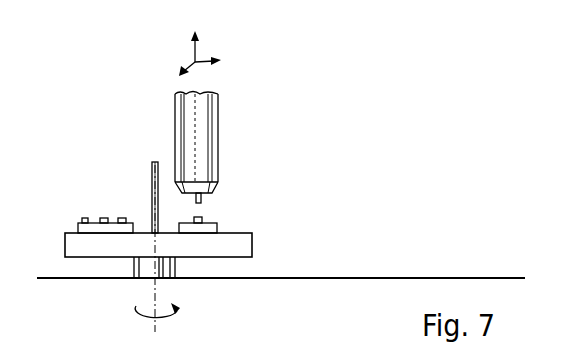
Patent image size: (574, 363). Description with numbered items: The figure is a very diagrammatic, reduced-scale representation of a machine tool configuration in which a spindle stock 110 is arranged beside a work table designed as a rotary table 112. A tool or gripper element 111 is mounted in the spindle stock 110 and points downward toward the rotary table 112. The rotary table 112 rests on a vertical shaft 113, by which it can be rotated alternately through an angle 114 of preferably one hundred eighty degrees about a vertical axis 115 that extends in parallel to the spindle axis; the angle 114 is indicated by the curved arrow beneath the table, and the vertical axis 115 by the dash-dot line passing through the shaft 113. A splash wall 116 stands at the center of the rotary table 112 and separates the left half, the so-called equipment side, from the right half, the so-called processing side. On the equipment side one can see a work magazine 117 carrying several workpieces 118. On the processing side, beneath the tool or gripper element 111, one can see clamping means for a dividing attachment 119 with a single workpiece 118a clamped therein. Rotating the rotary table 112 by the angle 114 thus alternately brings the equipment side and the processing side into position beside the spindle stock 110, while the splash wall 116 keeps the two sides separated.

The spindle stock 110 is at (217, 123).
The tool or gripper element 111 is at (204, 201).
The rotary table 112 is at (252, 247).
The vertical shaft 113 is at (168, 268).
The angle 114 is at (168, 322).
The vertical axis 115 is at (153, 267).
The splash wall 116 is at (151, 171).
The work magazine 117 is at (78, 229).
The workpieces 118 is at (104, 218).
The single workpiece 118a is at (204, 217).
The dividing attachment 119 is at (218, 223).